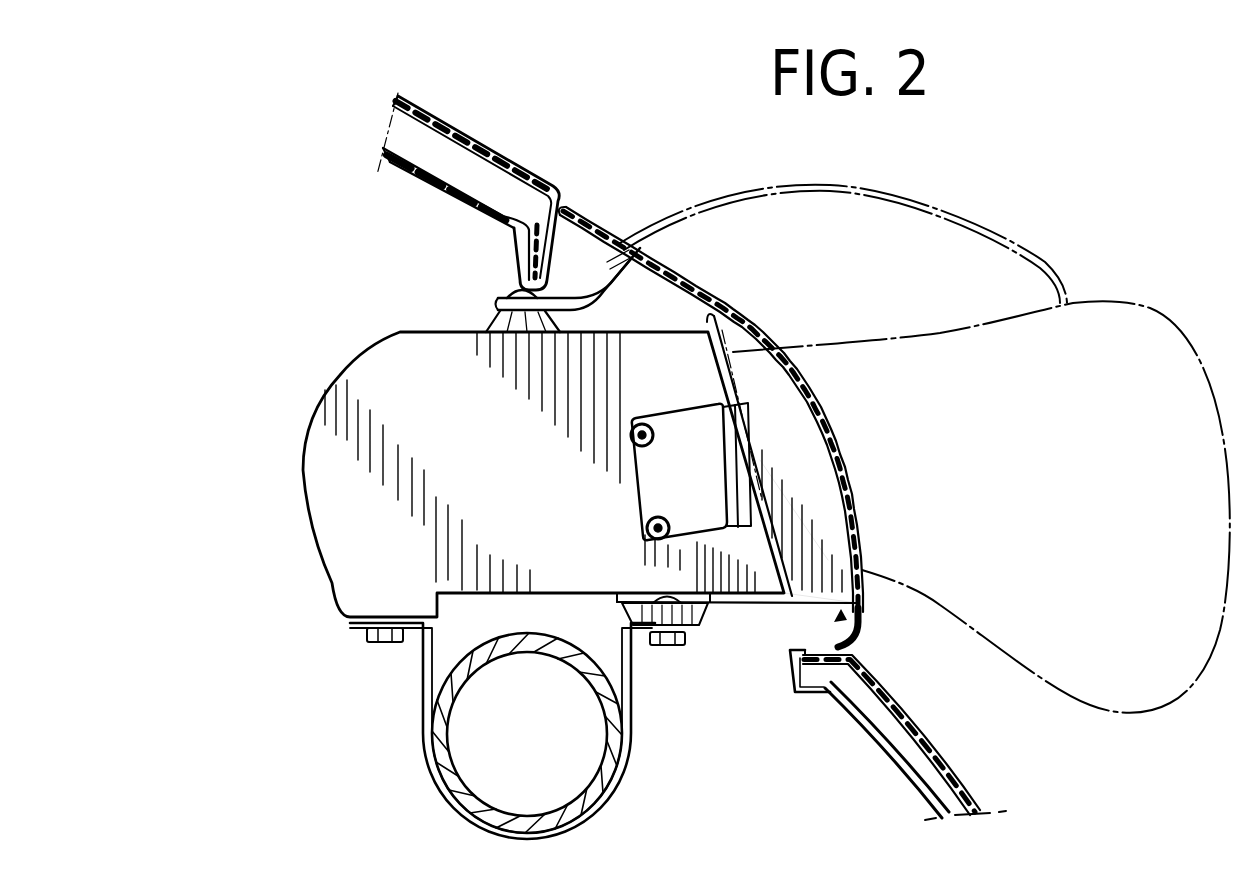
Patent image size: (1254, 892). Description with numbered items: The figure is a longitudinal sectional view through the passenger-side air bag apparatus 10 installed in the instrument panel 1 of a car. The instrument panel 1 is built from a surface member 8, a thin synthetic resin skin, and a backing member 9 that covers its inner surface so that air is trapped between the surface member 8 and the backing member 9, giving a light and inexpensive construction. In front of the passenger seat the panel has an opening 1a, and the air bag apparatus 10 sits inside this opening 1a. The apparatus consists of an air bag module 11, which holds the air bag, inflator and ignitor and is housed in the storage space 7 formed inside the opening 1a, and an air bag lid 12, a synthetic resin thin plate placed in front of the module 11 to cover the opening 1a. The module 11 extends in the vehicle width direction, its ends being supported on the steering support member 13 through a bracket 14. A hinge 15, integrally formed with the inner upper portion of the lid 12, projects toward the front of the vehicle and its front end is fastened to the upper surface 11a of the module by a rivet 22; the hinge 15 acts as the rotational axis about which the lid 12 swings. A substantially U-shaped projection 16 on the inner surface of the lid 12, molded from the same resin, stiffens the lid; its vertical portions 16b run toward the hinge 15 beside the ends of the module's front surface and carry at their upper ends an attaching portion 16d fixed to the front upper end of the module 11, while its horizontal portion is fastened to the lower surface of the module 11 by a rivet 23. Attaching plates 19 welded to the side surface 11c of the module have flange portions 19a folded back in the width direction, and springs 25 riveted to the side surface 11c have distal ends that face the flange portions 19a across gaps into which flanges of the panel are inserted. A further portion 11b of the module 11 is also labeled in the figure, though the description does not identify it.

The instrument panel 1 is at (463, 127).
The opening 1a is at (800, 622).
The storage space 7 is at (337, 333).
The surface member 8 is at (530, 163).
The backing member 9 is at (433, 183).
The air bag apparatus 10 is at (325, 582).
The air bag module 11 is at (312, 420).
The upper surface 11a is at (450, 328).
The housing lower flange 11b is at (477, 592).
The side surface 11c is at (638, 606).
The air bag lid 12 is at (828, 434).
The steering support member 13 is at (453, 802).
The bracket 14 is at (427, 680).
The hinge 15 is at (573, 305).
The projection 16 is at (842, 645).
The vertical portions 16b is at (793, 545).
The attaching portion 16d is at (712, 305).
The attaching plates 19 is at (745, 468).
The flange portions 19a is at (695, 535).
The rivet 22 is at (510, 288).
The rivet 23 is at (670, 647).
The springs 25 is at (685, 418).